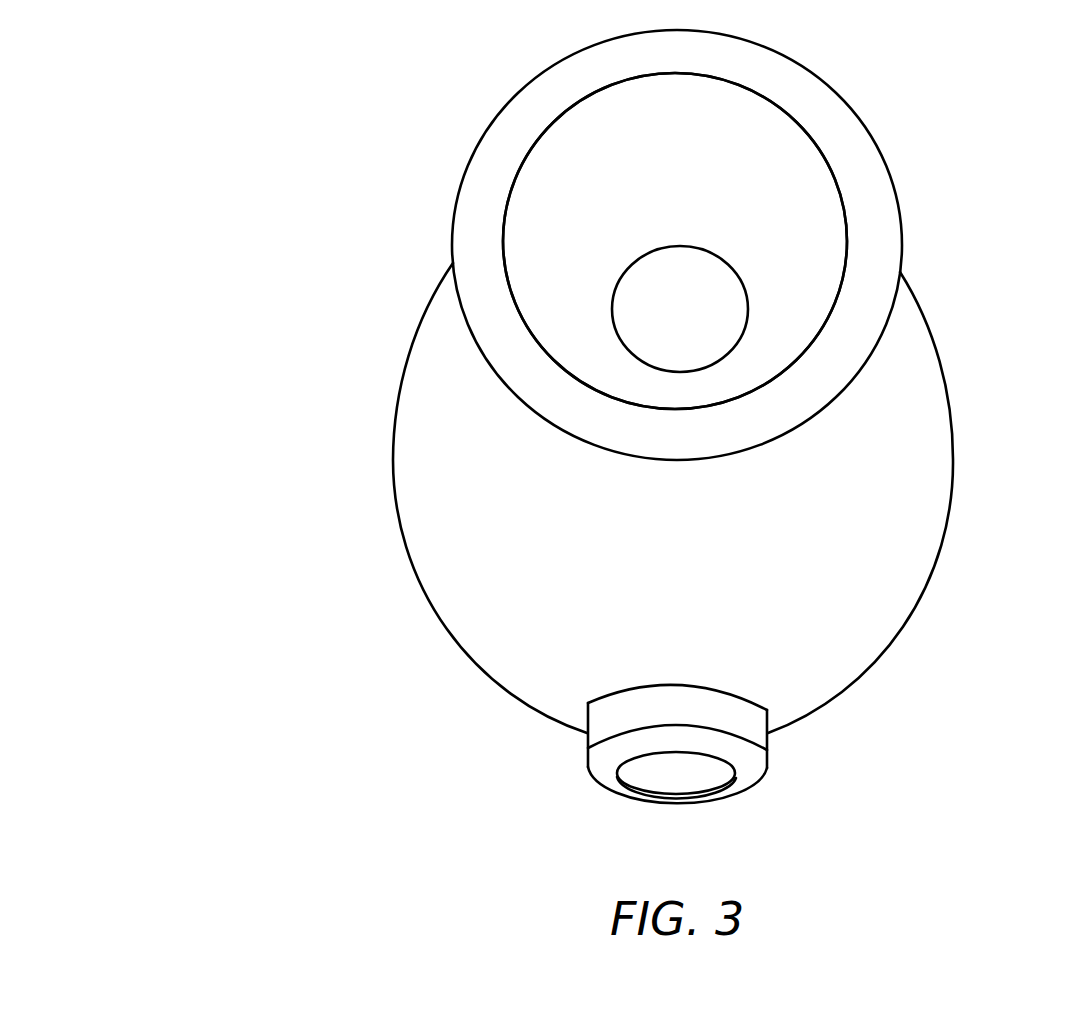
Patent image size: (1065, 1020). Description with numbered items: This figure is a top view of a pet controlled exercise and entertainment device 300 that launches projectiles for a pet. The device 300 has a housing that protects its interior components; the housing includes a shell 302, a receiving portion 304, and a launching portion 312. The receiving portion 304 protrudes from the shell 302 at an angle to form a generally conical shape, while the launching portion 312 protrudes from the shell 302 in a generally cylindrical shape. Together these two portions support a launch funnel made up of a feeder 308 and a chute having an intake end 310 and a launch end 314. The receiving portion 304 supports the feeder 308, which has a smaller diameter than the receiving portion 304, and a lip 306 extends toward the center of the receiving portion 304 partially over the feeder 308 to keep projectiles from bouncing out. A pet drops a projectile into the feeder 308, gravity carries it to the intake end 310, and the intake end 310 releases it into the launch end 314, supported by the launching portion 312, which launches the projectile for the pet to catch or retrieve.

The pet controlled exercise and entertainment device 300 is at (113, 208).
The shell 302 is at (947, 510).
The receiving portion 304 is at (890, 180).
The lip 306 is at (537, 107).
The feeder 308 is at (765, 162).
The intake end 310 is at (593, 280).
The launching portion 312 is at (586, 764).
The launch end 314 is at (707, 776).